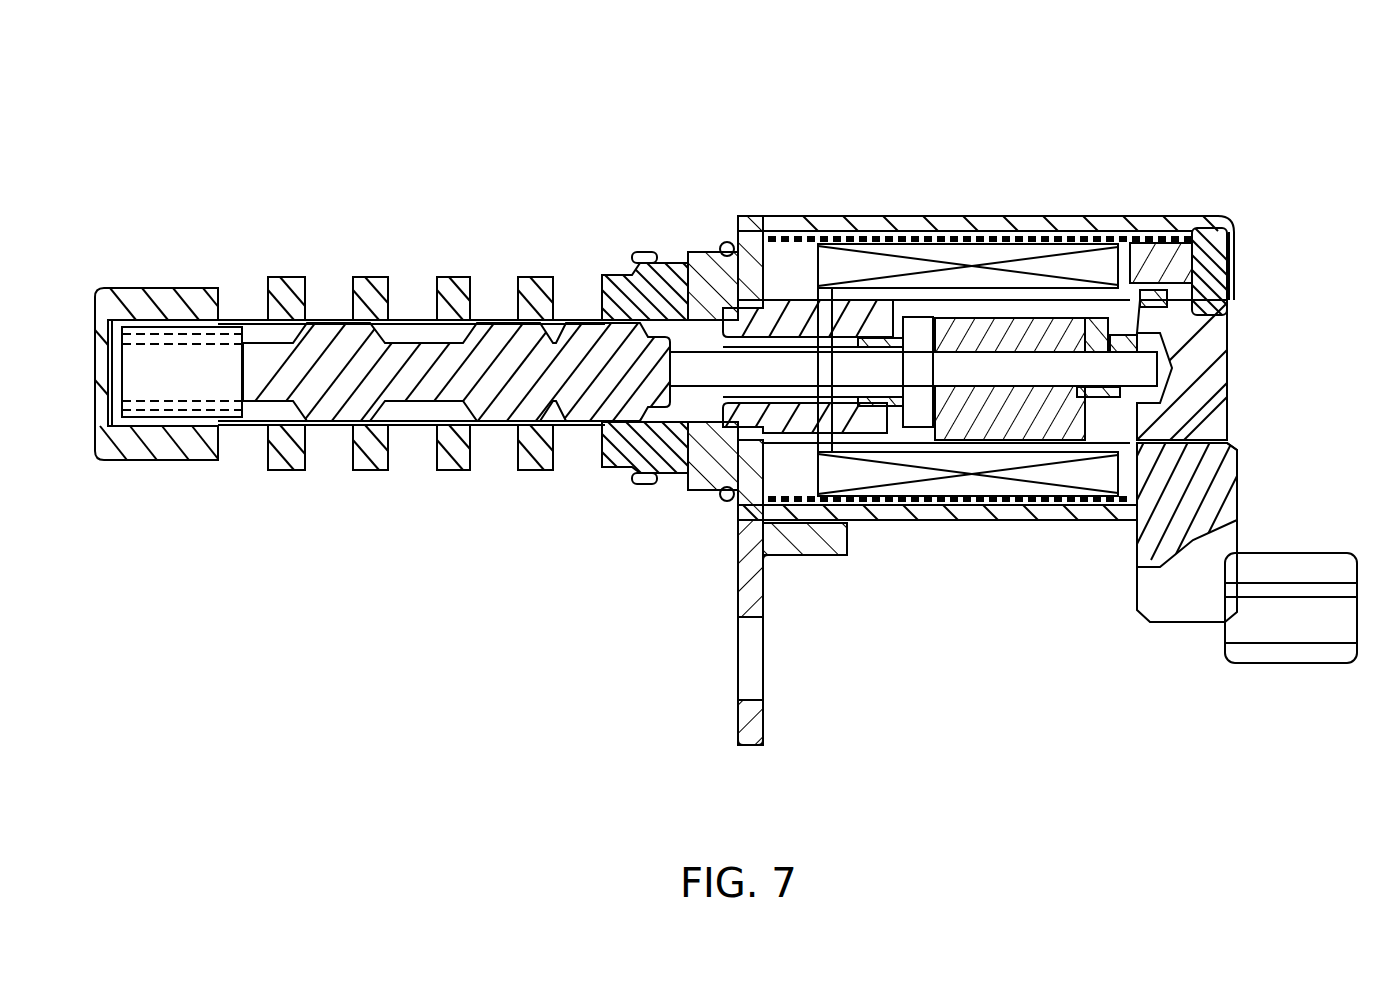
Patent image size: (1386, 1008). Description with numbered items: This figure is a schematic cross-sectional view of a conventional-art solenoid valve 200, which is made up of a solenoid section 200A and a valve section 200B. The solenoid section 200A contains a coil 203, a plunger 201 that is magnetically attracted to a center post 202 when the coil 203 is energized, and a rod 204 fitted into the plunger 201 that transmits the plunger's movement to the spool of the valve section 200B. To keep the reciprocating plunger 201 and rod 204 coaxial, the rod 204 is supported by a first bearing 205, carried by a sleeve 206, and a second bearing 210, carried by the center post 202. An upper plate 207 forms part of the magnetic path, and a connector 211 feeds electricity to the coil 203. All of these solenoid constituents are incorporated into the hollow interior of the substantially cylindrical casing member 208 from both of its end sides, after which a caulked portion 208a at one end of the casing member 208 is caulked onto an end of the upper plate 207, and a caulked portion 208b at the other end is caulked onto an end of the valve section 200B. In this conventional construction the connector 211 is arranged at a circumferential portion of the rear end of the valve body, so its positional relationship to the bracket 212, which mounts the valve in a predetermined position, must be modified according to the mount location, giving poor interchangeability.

The solenoid valve 200 is at (340, 108).
The solenoid section 200A is at (1005, 160).
The valve section 200B is at (483, 237).
The plunger 201 is at (1013, 400).
The center post 202 is at (848, 315).
The coil 203 is at (1085, 265).
The rod 204 is at (828, 420).
The first bearing 205 is at (1112, 328).
The sleeve 206 is at (1063, 433).
The upper plate 207 is at (1232, 298).
The casing member 208 is at (930, 232).
The caulked portion 208a is at (1238, 235).
The caulked portion 208b is at (640, 255).
The second bearing 210 is at (910, 420).
The connector 211 is at (1300, 562).
The bracket 212 is at (760, 720).